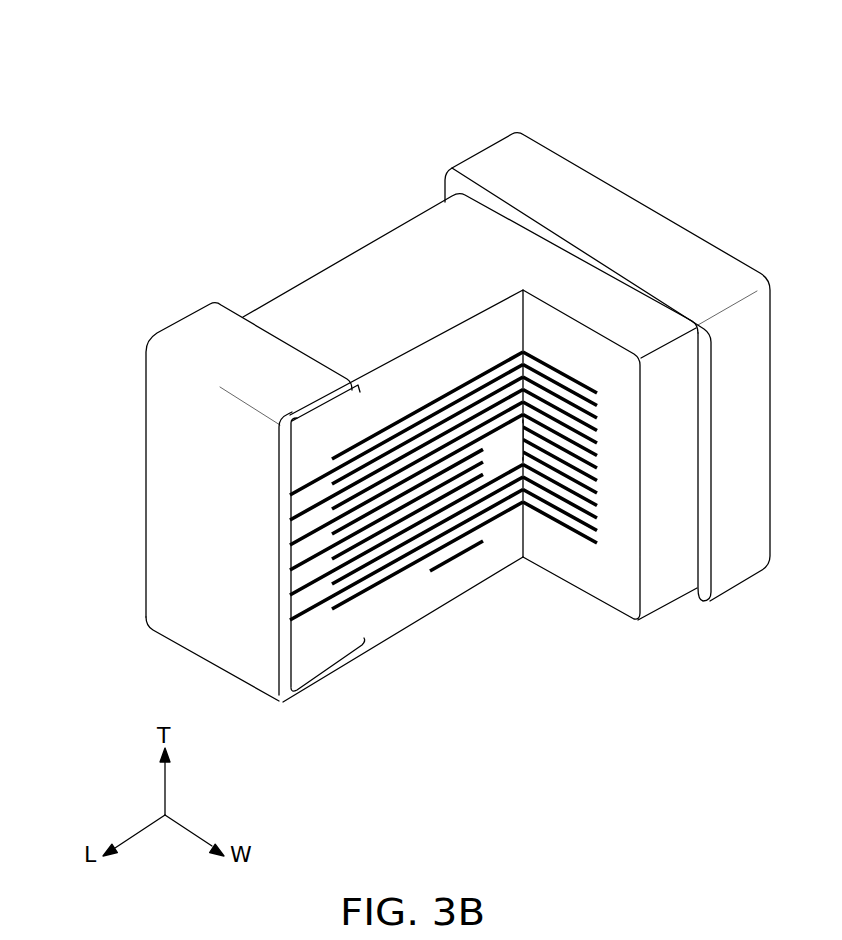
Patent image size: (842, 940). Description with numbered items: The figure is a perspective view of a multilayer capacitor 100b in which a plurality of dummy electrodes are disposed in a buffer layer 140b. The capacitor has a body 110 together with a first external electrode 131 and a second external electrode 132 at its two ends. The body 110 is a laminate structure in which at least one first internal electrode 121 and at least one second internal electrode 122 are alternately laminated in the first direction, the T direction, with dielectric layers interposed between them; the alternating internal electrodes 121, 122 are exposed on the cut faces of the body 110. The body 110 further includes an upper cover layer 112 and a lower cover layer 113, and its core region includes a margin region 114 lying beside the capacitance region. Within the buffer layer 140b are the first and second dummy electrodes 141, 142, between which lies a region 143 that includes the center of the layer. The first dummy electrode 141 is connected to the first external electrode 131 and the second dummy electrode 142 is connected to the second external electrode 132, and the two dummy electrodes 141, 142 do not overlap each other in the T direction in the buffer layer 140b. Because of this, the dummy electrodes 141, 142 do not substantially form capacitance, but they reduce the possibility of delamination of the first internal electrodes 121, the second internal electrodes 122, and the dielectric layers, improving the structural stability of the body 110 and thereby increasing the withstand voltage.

The multilayer capacitor 100b is at (333, 39).
The body 110 is at (500, 380).
The upper cover layer 112 is at (428, 378).
The lower cover layer 113 is at (398, 610).
The margin region 114 is at (623, 553).
The first internal electrode 121 is at (307, 472).
The second internal electrode 122 is at (343, 600).
The first external electrode 131 is at (203, 352).
The second external electrode 132 is at (553, 170).
The buffer layer 140b is at (513, 522).
The first dummy electrode 141 is at (460, 453).
The second dummy electrode 142 is at (530, 445).
The region including a center 143 is at (500, 450).